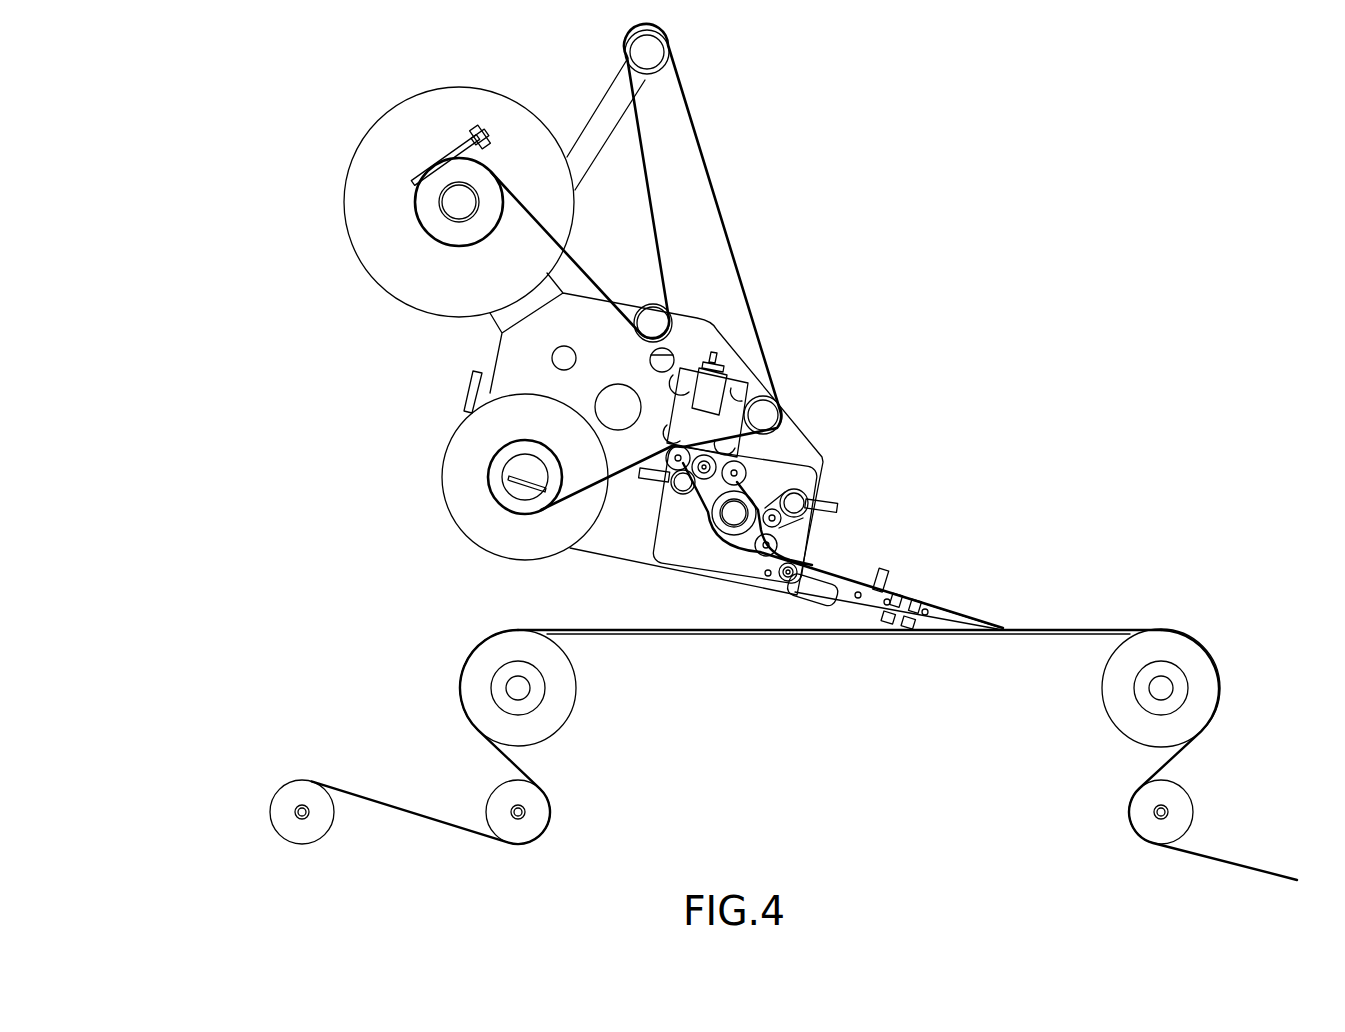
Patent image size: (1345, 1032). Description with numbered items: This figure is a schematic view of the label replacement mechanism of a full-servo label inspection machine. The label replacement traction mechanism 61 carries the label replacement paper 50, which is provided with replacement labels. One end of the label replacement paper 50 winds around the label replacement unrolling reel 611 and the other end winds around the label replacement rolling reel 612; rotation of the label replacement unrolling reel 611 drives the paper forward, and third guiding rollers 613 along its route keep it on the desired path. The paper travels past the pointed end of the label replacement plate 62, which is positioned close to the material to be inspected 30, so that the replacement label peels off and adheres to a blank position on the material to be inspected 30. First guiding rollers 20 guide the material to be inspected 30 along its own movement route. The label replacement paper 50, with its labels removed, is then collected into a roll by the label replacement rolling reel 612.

The first guiding roller 20 is at (518, 688).
The material to be inspected 30 is at (1115, 648).
The label replacement paper 50 is at (730, 258).
The label replacement traction mechanism 61 is at (717, 162).
The label replacement unrolling reel 611 is at (458, 197).
The label replacement rolling reel 612 is at (503, 477).
The third guiding roller 613 is at (648, 52).
The label replacement plate 62 is at (932, 613).